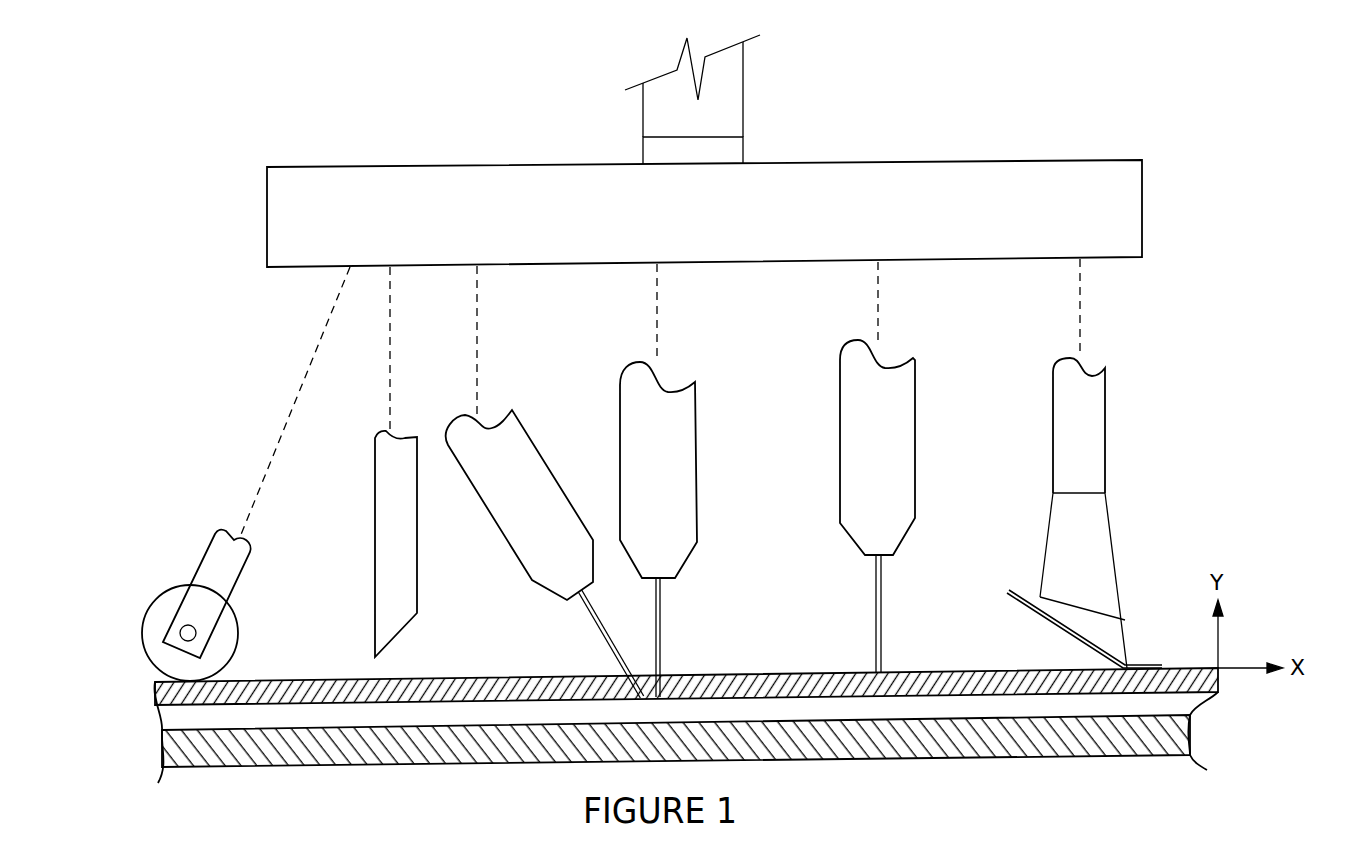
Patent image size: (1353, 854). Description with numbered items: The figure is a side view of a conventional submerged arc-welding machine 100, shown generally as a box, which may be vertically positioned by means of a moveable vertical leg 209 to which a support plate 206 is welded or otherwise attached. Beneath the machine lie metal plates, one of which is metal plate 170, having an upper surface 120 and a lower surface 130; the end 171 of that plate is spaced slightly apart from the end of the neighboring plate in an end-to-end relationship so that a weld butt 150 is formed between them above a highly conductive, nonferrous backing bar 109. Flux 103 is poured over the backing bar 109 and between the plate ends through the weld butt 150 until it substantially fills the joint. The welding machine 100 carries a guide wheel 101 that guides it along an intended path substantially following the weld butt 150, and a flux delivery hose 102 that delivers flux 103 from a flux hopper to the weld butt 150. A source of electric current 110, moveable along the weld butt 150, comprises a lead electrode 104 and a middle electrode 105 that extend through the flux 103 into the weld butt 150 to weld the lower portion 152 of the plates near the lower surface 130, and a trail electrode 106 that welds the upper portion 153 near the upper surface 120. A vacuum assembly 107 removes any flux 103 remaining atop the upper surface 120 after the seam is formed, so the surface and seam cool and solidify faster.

The submerged arc-welding machine 100 is at (1142, 187).
The guide wheel 101 is at (167, 517).
The flux delivery hose 102 is at (373, 462).
The flux 103 is at (502, 633).
The lead electrode 104 is at (542, 455).
The middle electrode 105 is at (698, 448).
The trail electrode 106 is at (915, 410).
The vacuum assembly 107 is at (1105, 412).
The backing bar 109 is at (1193, 740).
The source of electric current 110 is at (747, 353).
The upper surface 120 is at (335, 680).
The lower surface 130 is at (320, 765).
The weld butt 150 is at (140, 688).
The lower portion 152 is at (670, 698).
The upper portion 153 is at (897, 665).
The metal plate 170 is at (253, 670).
The end 171 is at (353, 682).
The support plate 206 is at (733, 145).
The moveable vertical leg 209 is at (733, 92).